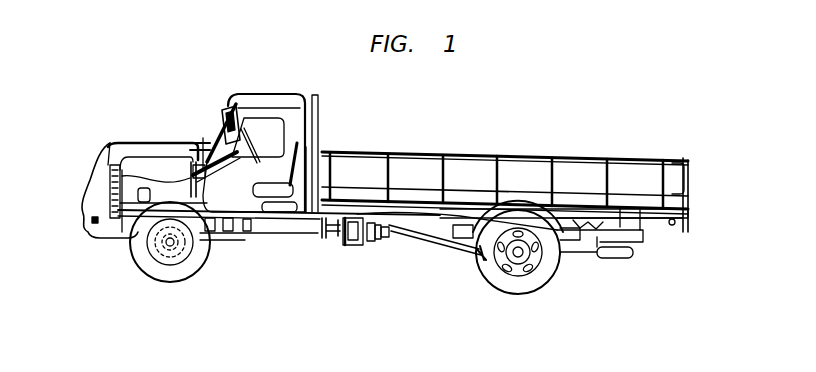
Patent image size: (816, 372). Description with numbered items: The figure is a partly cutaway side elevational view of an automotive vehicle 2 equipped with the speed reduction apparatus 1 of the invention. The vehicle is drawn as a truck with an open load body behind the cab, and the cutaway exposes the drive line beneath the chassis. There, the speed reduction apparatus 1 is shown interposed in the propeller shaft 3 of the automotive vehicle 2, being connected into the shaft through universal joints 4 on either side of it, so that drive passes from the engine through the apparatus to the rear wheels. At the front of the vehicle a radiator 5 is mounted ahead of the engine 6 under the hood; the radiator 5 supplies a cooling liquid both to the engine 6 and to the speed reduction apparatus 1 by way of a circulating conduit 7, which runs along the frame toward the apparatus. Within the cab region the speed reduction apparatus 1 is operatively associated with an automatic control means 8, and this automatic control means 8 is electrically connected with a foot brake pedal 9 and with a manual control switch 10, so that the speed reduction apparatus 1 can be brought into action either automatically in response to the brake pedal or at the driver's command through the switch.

The speed reduction apparatus 1 is at (357, 243).
The automotive vehicle 2 is at (357, 152).
The propeller shaft 3 is at (430, 247).
The universal joints 4 is at (328, 227).
The radiator 5 is at (102, 190).
The engine 6 is at (160, 187).
The circulating conduit 7 is at (263, 223).
The automatic control means 8 is at (197, 140).
The foot brake pedal 9 is at (220, 160).
The manual control switch 10 is at (240, 100).